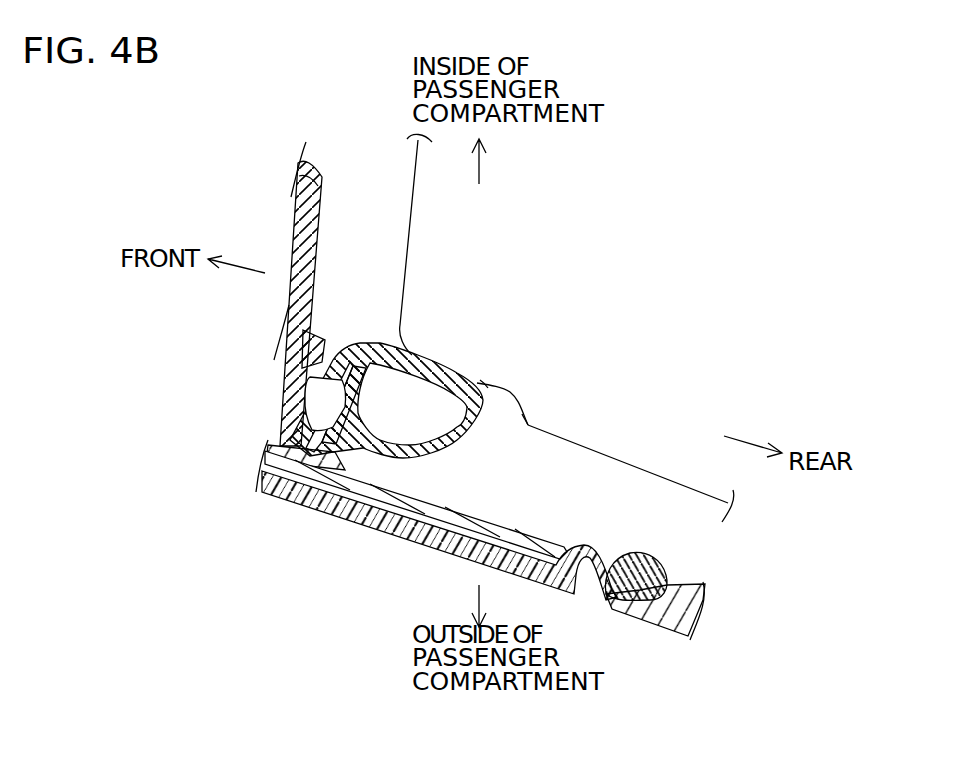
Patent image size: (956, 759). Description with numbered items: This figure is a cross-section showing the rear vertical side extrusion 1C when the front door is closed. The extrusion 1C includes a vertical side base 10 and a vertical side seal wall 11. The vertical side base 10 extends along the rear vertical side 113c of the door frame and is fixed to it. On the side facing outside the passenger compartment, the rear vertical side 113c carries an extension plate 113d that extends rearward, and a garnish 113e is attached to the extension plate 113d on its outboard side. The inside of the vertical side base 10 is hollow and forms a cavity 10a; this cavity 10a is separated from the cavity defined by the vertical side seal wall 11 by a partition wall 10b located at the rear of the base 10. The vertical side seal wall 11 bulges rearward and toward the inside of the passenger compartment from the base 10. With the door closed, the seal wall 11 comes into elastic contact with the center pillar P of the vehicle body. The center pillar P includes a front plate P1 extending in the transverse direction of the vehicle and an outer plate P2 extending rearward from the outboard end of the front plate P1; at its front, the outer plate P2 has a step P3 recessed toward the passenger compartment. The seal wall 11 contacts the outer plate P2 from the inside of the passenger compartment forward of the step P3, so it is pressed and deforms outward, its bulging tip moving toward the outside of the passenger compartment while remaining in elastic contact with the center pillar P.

The rear vertical side of the frame 113c is at (330, 167).
The front plate P1 is at (408, 199).
The rear vertical side extrusion 1C is at (366, 335).
The vertical side seal wall 11 is at (481, 382).
The vertical side base 10 is at (328, 400).
The cavity 10a is at (292, 446).
The partition wall 10b is at (353, 397).
The step P3 is at (493, 395).
The outer plate P2 is at (528, 426).
The center pillar P is at (589, 462).
The garnish 113e is at (288, 492).
The extension plate 113d is at (400, 522).